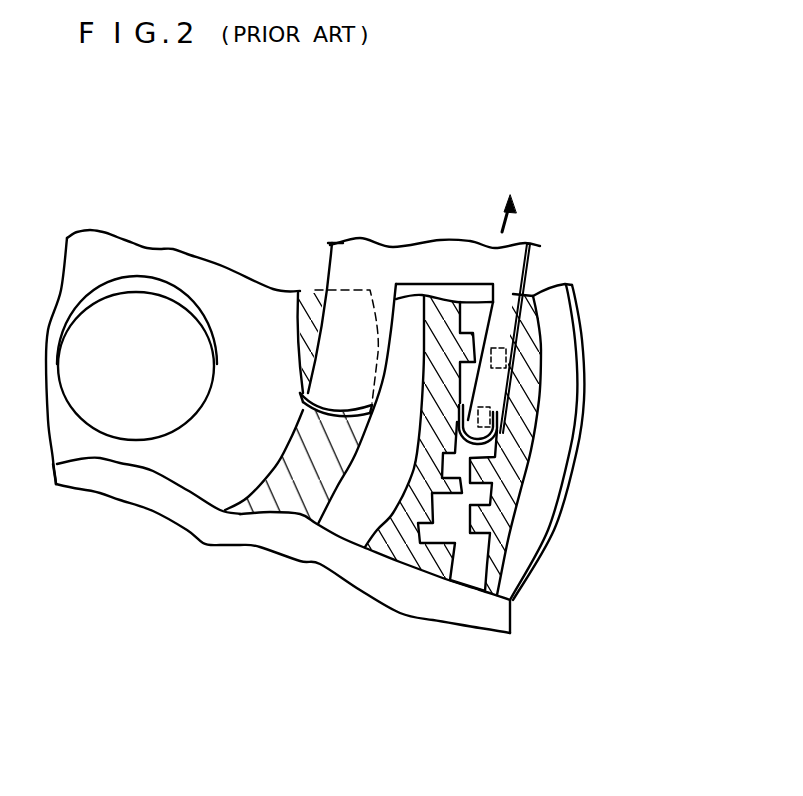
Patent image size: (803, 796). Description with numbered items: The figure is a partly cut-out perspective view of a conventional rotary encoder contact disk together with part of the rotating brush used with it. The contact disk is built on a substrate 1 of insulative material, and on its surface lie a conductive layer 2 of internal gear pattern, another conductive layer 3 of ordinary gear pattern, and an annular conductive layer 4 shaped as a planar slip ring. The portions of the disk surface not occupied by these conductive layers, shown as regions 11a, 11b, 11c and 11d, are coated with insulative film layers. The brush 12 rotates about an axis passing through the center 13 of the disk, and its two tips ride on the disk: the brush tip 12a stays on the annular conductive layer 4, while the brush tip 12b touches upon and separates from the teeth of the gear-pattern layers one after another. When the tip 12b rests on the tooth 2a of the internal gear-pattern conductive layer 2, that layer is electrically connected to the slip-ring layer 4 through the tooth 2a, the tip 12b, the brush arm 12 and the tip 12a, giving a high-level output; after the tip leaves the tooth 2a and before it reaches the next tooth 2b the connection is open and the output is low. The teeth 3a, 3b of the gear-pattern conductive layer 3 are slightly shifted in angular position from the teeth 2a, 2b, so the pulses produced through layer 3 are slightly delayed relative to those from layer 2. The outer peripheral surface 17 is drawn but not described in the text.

The substrate 1 is at (520, 613).
The internal gear-pattern conductive layer 2 is at (520, 455).
The tooth of internal gear-pattern conductive layer 2a is at (507, 420).
The next tooth of internal gear-pattern conductive layer 2b is at (515, 293).
The gear-pattern conductive layer 3 is at (490, 553).
The tooth of gear-pattern conductive layer 3a is at (485, 393).
The tooth of gear-pattern conductive layer 3b is at (507, 300).
The annular conductive layer 4 is at (302, 512).
The region coated with insulative film layer 11a is at (563, 372).
The region coated with insulative film layer 11b is at (483, 463).
The region coated with insulative film layer 11c is at (357, 527).
The region coated with insulative film layer 11d is at (193, 481).
The brush 12 is at (448, 247).
The brush tip 12a is at (330, 330).
The brush tip 12b is at (440, 300).
The center of contact disk 13 is at (137, 360).
The outer peripheral surface 17 is at (567, 328).